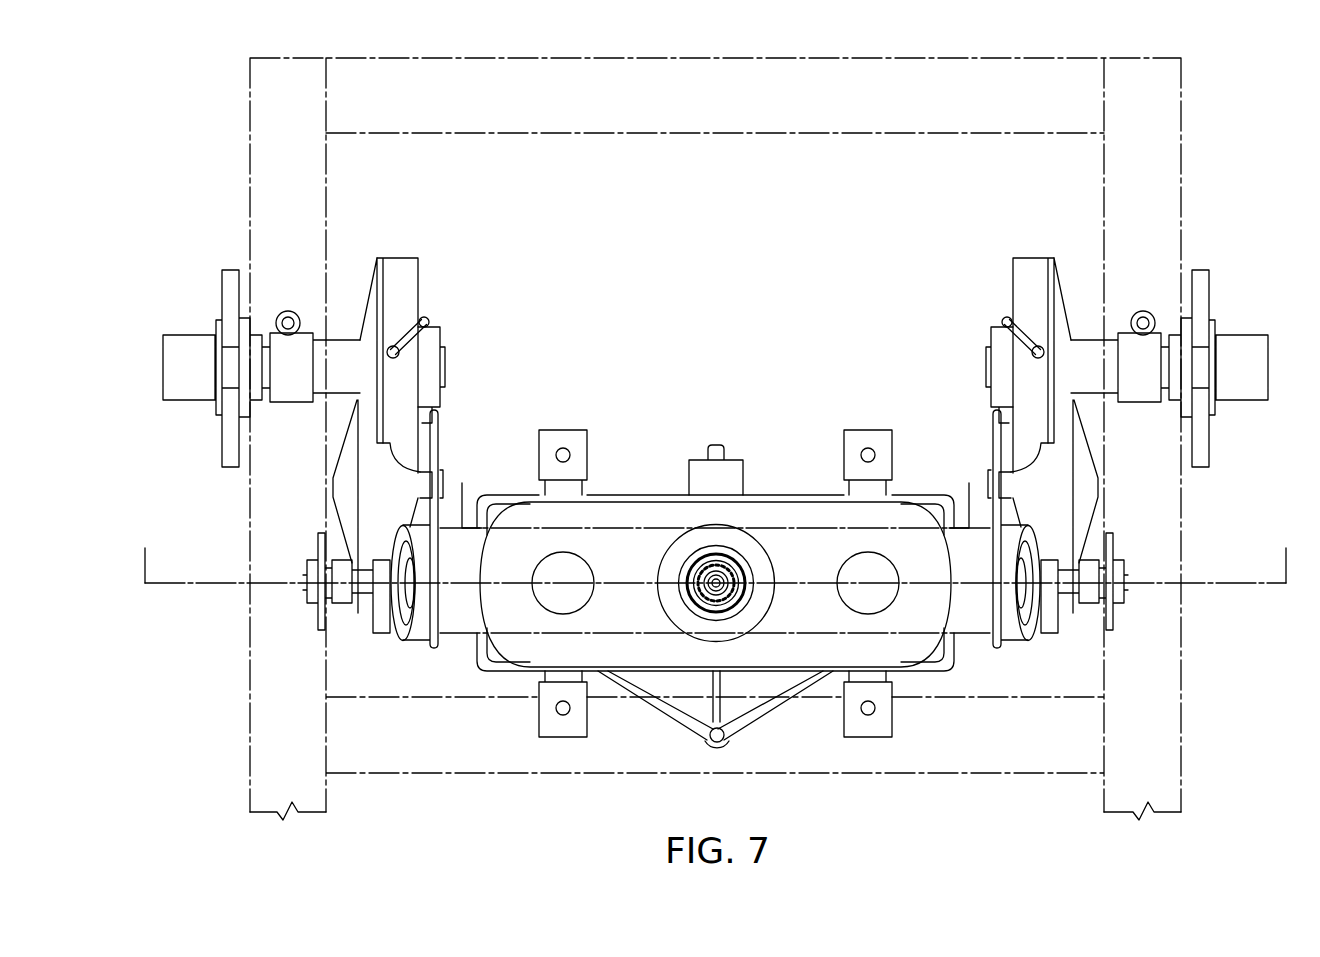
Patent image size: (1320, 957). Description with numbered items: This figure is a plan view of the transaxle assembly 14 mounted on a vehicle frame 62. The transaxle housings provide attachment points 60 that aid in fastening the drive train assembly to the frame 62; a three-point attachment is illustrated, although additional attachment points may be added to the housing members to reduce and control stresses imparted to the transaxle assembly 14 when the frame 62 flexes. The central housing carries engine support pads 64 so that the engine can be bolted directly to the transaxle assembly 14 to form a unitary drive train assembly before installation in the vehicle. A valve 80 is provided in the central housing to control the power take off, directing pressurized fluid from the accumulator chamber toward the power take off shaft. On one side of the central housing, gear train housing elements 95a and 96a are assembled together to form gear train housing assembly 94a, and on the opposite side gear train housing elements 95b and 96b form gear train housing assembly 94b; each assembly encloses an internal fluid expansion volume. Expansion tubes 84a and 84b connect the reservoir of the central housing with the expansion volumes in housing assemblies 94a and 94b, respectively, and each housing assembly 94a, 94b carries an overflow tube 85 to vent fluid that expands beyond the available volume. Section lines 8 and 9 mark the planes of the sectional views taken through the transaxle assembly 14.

The section line 8- 8 is at (715, 548).
The section line 9- 9 is at (715, 486).
The transaxle assembly 14 is at (782, 262).
The attachment points 60 is at (288, 316).
The vehicle frame 62 is at (1182, 760).
The engine support pads 64 is at (540, 443).
The valve 80 is at (730, 481).
The expansion tube 84a is at (437, 430).
The expansion tube 84b is at (994, 430).
The overflow tubes 85 is at (407, 333).
The gear train housing assembly 94a is at (368, 422).
The gear train housing assembly 94b is at (1063, 422).
The gear train housing element 95a is at (368, 308).
The gear train housing element 95b is at (1063, 308).
The gear train housing element 96a is at (405, 258).
The gear train housing element 96b is at (1026, 258).